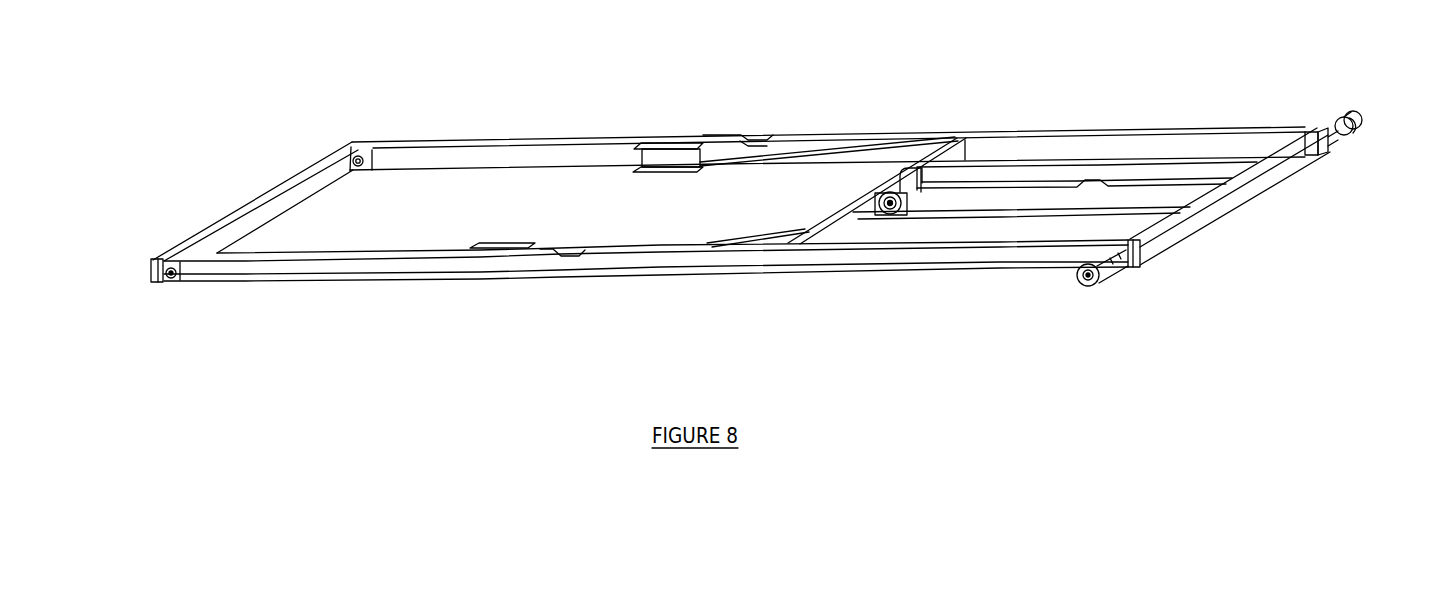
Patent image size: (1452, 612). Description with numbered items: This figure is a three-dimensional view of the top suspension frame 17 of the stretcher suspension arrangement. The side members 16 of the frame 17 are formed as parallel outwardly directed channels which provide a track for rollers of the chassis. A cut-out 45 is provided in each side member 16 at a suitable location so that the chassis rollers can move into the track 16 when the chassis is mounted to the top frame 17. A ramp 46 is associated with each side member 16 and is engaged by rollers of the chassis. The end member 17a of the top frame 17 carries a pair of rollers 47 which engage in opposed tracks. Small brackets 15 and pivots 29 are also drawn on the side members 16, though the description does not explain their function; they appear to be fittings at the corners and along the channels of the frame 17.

The bracket 15 is at (608, 211).
The side member 16 is at (728, 212).
The top suspension frame 17 is at (1058, 165).
The end member 17a is at (1230, 196).
The pivot 29 is at (313, 213).
The cut-out 45 is at (675, 207).
The ramp 46 is at (829, 206).
The rollers 47 is at (1257, 194).